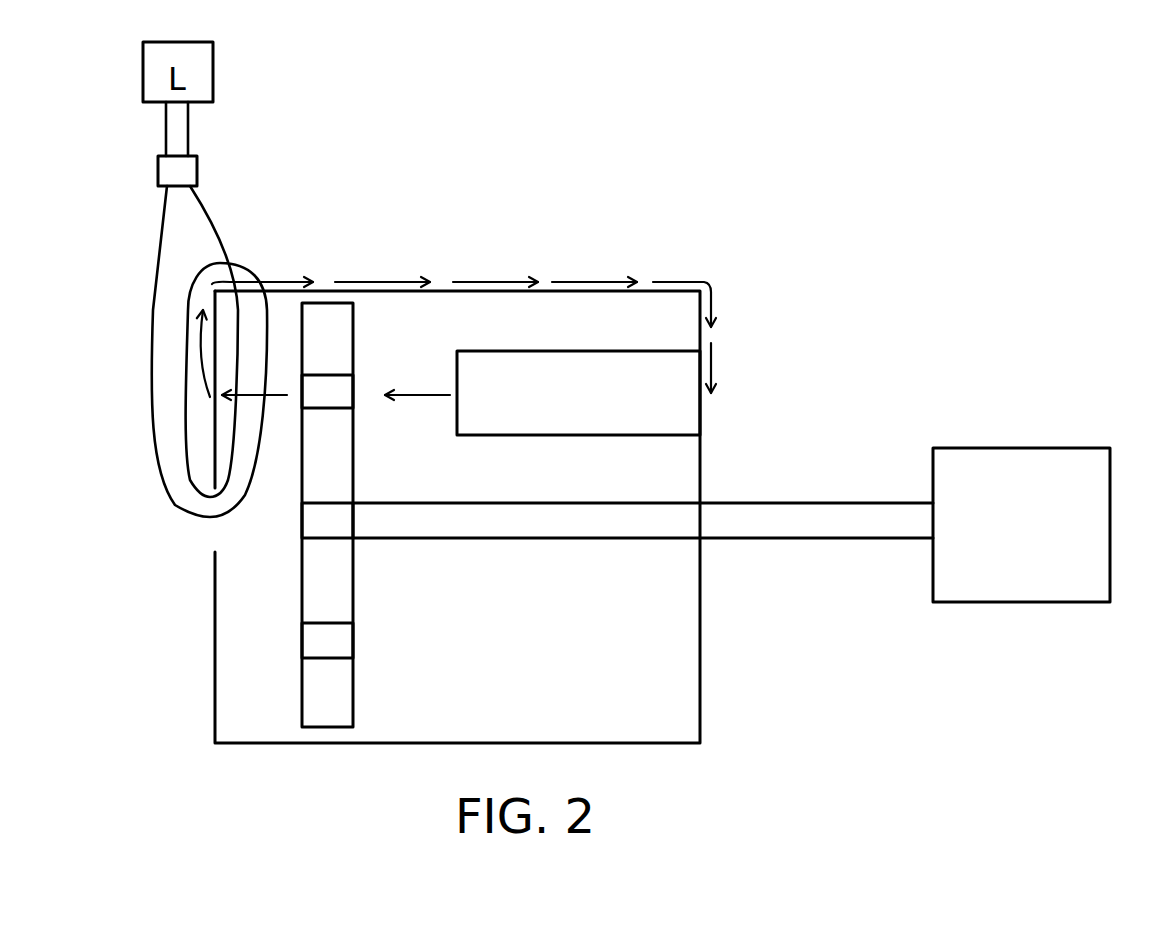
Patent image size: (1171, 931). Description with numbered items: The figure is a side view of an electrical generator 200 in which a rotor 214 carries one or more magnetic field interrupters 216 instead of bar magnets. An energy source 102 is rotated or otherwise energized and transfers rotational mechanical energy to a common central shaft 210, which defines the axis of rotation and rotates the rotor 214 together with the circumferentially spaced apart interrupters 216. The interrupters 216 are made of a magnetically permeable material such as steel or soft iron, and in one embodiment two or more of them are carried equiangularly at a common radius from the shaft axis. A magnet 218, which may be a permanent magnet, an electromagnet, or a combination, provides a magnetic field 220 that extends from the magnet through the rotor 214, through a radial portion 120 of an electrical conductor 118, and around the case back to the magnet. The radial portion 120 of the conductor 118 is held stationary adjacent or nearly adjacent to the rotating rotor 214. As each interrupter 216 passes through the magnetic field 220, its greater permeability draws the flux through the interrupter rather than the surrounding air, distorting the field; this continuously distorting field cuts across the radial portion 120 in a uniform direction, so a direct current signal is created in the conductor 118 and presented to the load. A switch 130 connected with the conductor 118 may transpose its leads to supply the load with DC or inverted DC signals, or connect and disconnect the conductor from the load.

The energy source 102 is at (1030, 448).
The electrical conductor 118 is at (212, 223).
The radial portion 120 is at (257, 428).
The switch 130 is at (158, 165).
The electrical generator 200 is at (845, 188).
The central shaft 210 is at (738, 503).
The rotor 214 is at (355, 577).
The magnetic field interrupter 216 is at (356, 388).
The magnet 218 is at (553, 436).
The magnetic field 220 is at (428, 376).